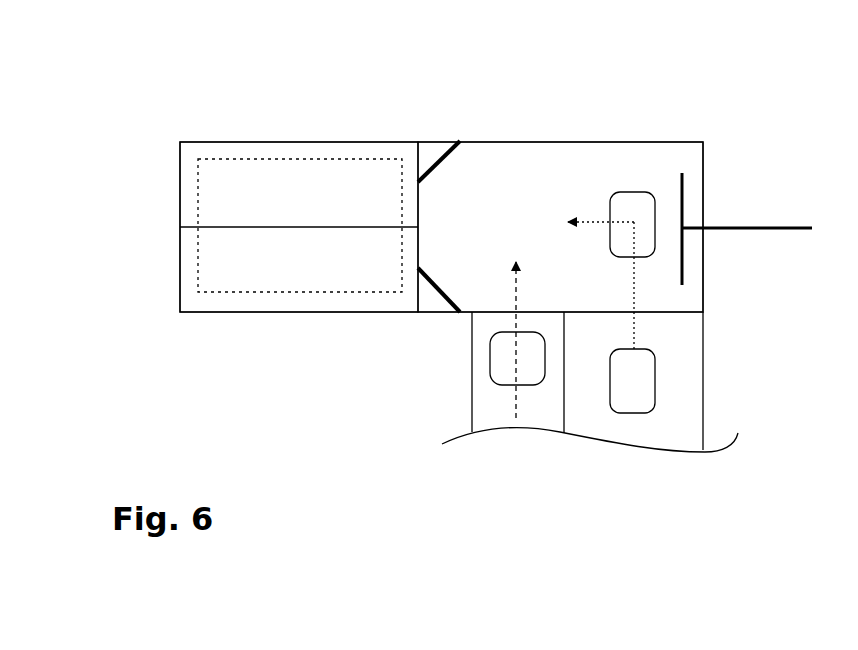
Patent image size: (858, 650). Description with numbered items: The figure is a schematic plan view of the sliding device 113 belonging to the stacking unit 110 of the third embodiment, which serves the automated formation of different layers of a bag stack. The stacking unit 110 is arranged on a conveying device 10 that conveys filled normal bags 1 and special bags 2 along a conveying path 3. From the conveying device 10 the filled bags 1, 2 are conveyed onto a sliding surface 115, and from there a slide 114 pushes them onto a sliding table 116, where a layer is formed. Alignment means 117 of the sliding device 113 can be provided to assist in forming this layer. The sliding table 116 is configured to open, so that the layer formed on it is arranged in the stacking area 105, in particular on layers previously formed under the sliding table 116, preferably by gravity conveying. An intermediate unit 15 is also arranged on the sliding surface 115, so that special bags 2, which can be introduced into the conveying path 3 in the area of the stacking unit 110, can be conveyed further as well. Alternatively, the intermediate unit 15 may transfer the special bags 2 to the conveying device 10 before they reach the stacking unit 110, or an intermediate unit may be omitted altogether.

The normal bags 1 is at (643, 248).
The special bags 2 is at (497, 368).
The conveying path 3 is at (634, 327).
The conveying device 10 is at (690, 373).
The intermediate unit 15 is at (487, 412).
The stacking area 105 is at (260, 155).
The stacking unit 110 is at (632, 85).
The sliding device 113 is at (772, 125).
The slide 114 is at (715, 225).
The sliding surface 115 is at (553, 170).
The sliding table 116 is at (218, 150).
The alignment means 117 is at (438, 163).